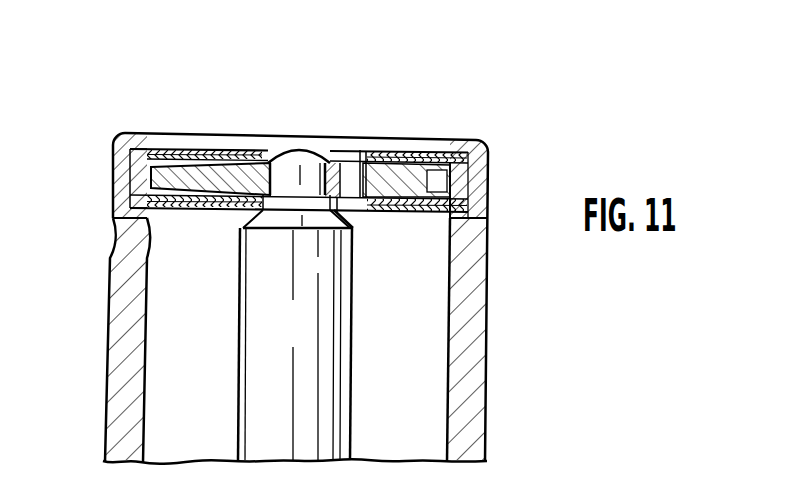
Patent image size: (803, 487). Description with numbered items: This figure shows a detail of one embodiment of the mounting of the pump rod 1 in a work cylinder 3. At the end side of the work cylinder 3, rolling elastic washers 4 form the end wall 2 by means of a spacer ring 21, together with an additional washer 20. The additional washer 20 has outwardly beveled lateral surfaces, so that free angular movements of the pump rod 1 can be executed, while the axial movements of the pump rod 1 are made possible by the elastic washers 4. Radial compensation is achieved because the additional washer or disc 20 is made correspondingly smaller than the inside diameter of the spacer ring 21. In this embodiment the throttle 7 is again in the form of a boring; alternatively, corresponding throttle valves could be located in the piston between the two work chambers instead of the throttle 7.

The pump rod 1 is at (333, 395).
The end wall 2 is at (288, 104).
The work cylinder 3 is at (472, 443).
The rolling elastic washer 4 is at (180, 145).
The throttle 7 is at (352, 162).
The additional washer 20 is at (417, 175).
The spacer ring 21 is at (137, 180).